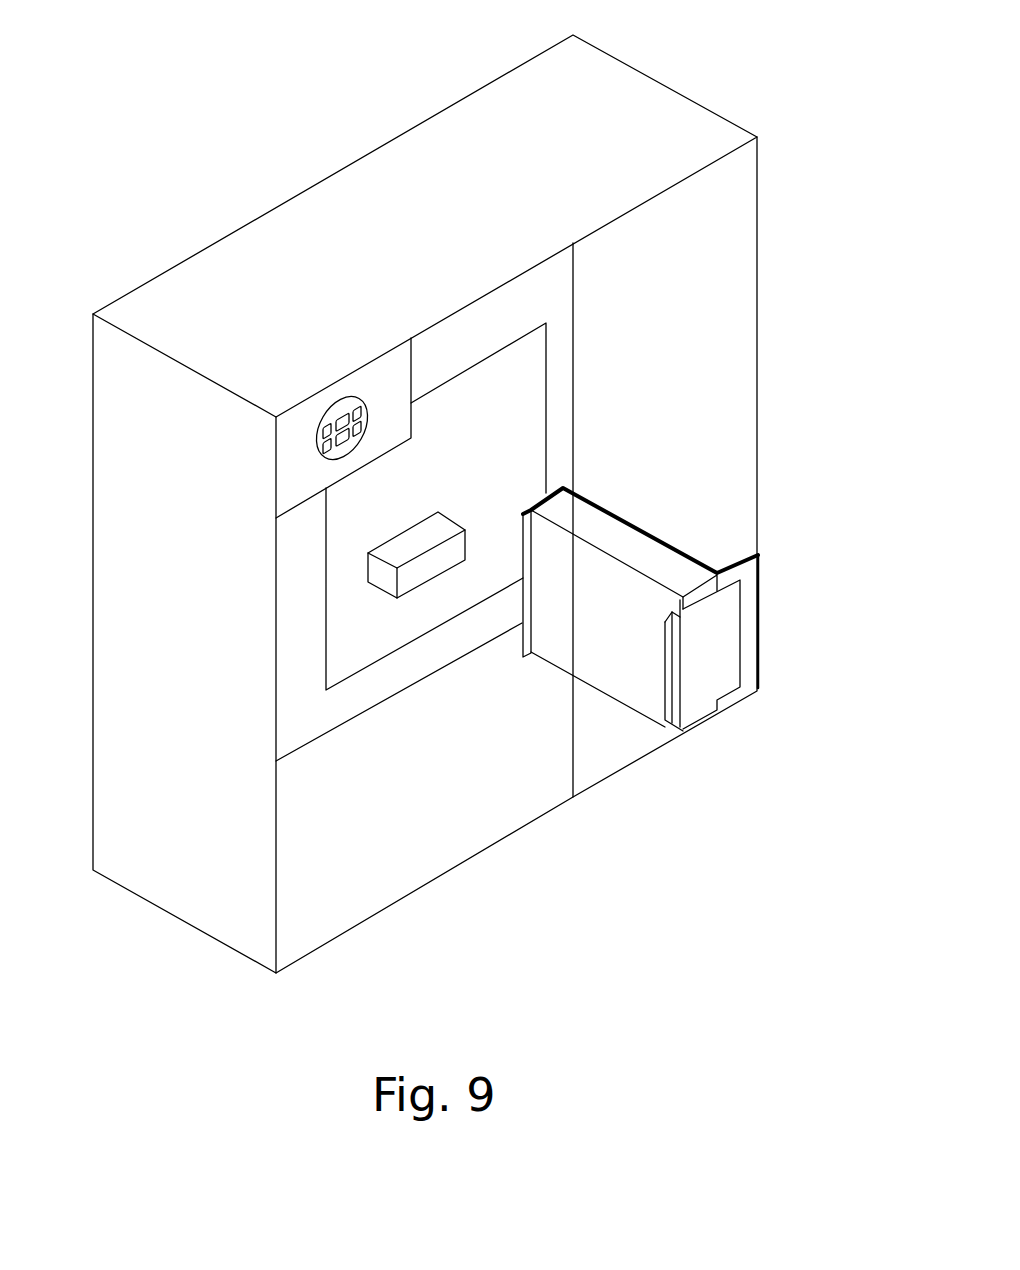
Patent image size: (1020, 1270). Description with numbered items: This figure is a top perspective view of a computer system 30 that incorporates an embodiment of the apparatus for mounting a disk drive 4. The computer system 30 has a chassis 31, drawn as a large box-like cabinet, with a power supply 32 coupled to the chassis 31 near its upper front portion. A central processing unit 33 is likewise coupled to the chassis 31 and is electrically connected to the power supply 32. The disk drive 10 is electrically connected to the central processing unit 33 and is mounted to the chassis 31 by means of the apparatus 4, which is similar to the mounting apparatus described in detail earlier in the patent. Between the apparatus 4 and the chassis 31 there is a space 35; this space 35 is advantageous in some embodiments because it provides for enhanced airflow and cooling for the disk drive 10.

The computer system 30 is at (683, 71).
The chassis 31 is at (757, 377).
The power supply 32 is at (377, 383).
The central processing unit 33 is at (428, 563).
The space 35 is at (632, 518).
The apparatus for mounting a disk drive 4 is at (682, 517).
The disk drive 10 is at (608, 629).